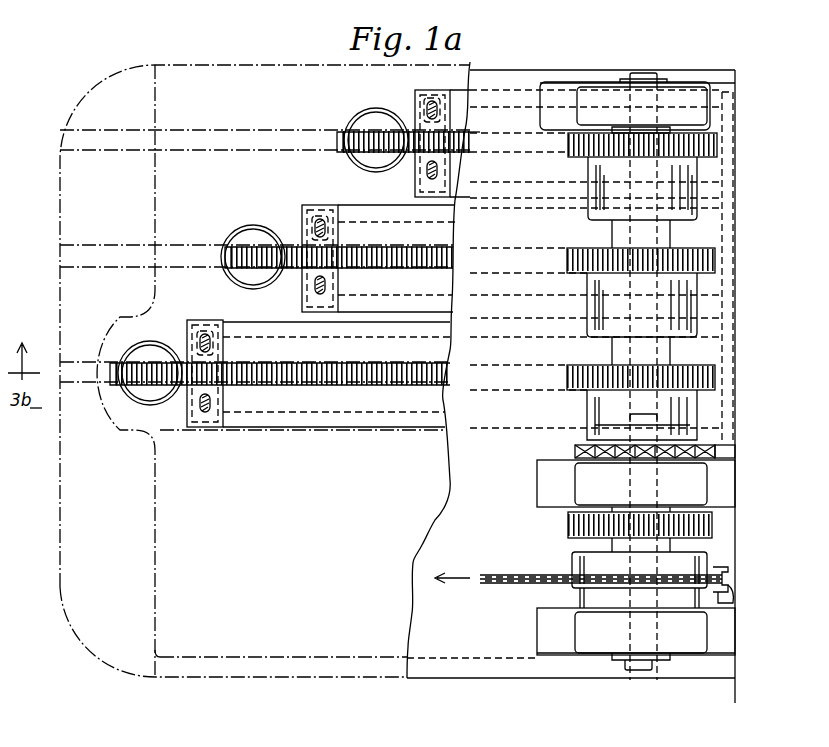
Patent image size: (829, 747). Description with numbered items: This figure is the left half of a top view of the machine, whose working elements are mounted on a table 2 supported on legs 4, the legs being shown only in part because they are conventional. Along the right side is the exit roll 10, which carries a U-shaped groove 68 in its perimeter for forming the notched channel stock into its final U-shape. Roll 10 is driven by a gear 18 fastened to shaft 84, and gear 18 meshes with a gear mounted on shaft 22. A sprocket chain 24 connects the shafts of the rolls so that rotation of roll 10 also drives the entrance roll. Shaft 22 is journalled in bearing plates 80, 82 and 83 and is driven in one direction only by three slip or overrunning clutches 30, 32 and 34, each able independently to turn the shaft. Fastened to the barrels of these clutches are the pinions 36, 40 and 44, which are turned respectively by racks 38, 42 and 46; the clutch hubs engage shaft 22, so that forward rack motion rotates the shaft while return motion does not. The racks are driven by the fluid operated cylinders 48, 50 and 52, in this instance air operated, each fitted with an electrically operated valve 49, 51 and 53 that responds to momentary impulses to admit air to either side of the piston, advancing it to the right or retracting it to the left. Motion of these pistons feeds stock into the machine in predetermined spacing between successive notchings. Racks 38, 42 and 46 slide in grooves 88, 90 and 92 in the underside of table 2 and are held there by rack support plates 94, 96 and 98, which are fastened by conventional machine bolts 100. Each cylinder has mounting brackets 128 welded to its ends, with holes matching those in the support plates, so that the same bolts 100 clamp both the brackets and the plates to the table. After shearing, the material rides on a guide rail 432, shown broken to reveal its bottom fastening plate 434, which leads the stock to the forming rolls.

The table 2 is at (452, 670).
The legs 4 is at (60, 560).
The exit roll 10 is at (580, 553).
The gear 18 is at (570, 526).
The shaft 22 is at (650, 74).
The sprocket chain 24 is at (575, 452).
The slip clutch 30 is at (592, 212).
The slip clutch 32 is at (592, 328).
The slip clutch 34 is at (600, 412).
The pinion 36 is at (578, 148).
The rack 38 is at (475, 135).
The pinion 40 is at (573, 270).
The rack 42 is at (395, 250).
The pinion 44 is at (570, 388).
The rack 46 is at (365, 370).
The fluid operated cylinder 48 is at (495, 110).
The electrically operated valve 49 is at (370, 125).
The fluid operated cylinder 50 is at (370, 220).
The electrically operated valve 51 is at (258, 237).
The fluid operated cylinder 52 is at (275, 428).
The electrically operated valve 53 is at (145, 352).
The groove 68 is at (580, 578).
The bearing plate 80 is at (545, 625).
The bearing plate 82 is at (585, 478).
The bearing plate 83 is at (600, 97).
The shaft 84 is at (632, 672).
The groove 88 is at (516, 154).
The groove 90 is at (492, 268).
The groove 92 is at (492, 388).
The rack support plate 94 is at (455, 95).
The rack support plate 96 is at (455, 212).
The rack support plate 98 is at (258, 324).
The machine bolts 100 is at (427, 108).
The mounting brackets 128 is at (440, 76).
The guide rail 432 is at (718, 573).
The bottom fastening plate 434 is at (728, 590).